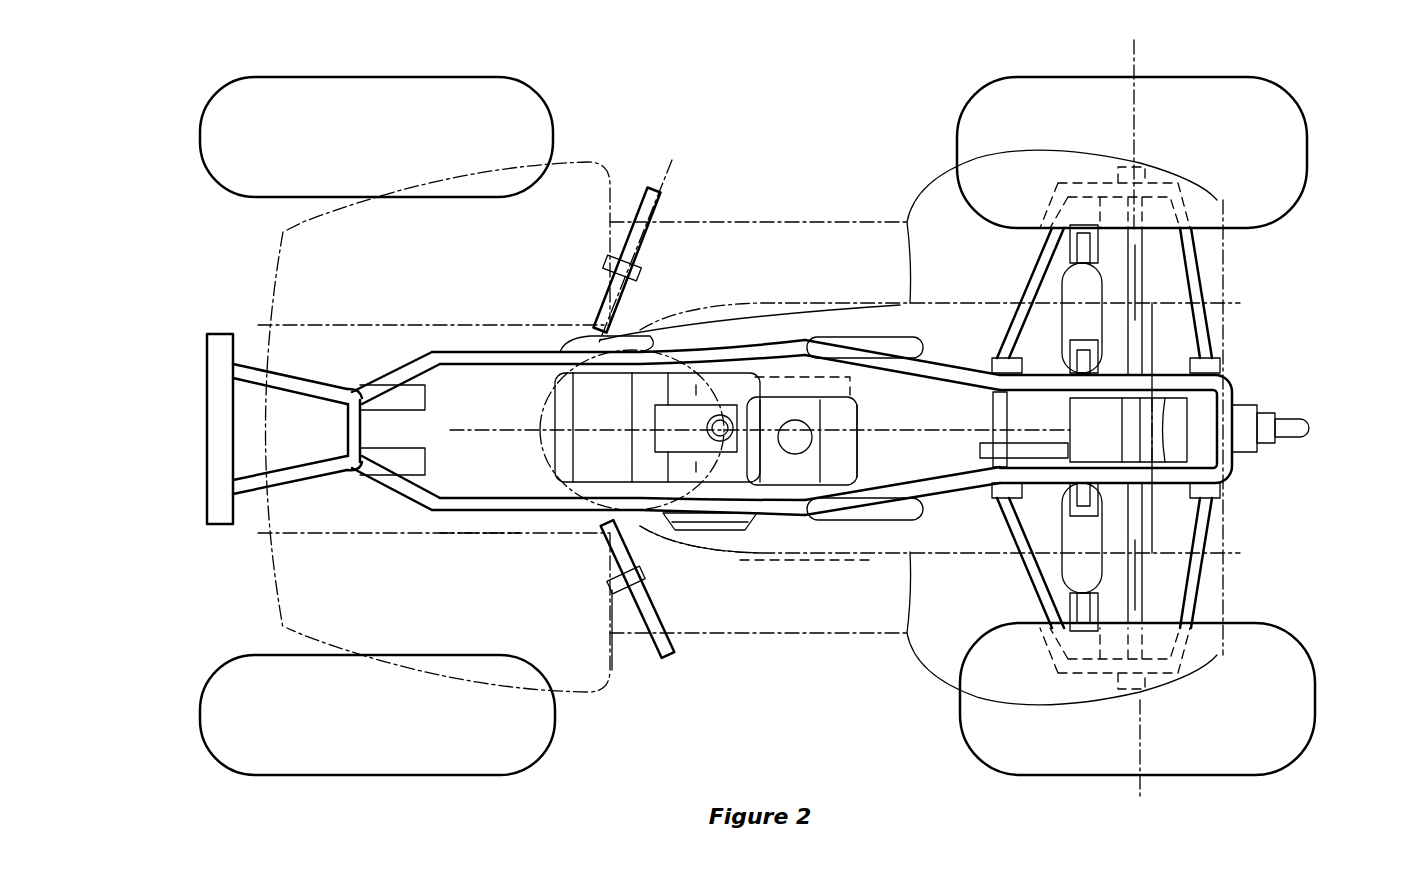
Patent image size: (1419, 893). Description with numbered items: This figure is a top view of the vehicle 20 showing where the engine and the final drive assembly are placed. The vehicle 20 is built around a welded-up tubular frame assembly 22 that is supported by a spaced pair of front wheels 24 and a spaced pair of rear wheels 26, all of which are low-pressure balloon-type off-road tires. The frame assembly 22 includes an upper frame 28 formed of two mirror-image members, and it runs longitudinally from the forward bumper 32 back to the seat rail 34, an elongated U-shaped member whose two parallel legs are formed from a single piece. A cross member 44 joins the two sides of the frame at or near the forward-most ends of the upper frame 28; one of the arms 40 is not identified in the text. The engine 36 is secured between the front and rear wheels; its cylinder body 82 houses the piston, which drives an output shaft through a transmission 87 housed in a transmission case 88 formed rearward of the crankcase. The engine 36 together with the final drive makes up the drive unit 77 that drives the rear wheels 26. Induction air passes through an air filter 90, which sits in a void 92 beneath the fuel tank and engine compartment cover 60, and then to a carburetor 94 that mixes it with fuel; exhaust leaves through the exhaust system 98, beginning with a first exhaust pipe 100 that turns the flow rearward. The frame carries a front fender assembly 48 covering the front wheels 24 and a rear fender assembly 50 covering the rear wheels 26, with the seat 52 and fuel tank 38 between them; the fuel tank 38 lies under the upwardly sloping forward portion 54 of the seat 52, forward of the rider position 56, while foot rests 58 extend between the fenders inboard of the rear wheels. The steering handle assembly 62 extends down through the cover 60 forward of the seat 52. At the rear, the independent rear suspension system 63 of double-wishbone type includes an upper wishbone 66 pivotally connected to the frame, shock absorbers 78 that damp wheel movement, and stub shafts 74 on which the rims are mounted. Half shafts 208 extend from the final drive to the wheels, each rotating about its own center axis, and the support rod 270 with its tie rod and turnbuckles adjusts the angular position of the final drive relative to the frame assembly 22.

The vehicle 20 is at (662, 97).
The frame assembly 22 is at (488, 350).
The front wheels 24 is at (538, 118).
The rear wheels 26 is at (1303, 142).
The upper frame 28 is at (527, 355).
The forward bumper 32 is at (215, 362).
The seat rail 34 is at (1230, 470).
The engine 36 is at (692, 550).
The fuel tank 38 is at (810, 468).
The front frame arms 40 is at (300, 375).
The cross member 44 is at (345, 432).
The front fender assembly 48 is at (300, 220).
The rear fender assembly 50 is at (992, 145).
The seat 52 is at (872, 300).
The upwardly sloping forward portion 54 is at (700, 305).
The rider position 56 is at (955, 300).
The foot rest 58 is at (792, 222).
The fuel tank and engine compartment cover 60 is at (475, 540).
The steering handle assembly 62 is at (630, 617).
The independent rear suspension system 63 is at (1200, 258).
The upper wishbone 66 is at (1035, 250).
The stub shaft 74 is at (745, 537).
The drive unit 77 is at (722, 532).
The shock absorbers 78 is at (1062, 315).
The cylinder body 82 is at (580, 455).
The transmission 87 is at (862, 444).
The transmission case 88 is at (858, 470).
The air filter 90 is at (727, 400).
The void 92 is at (600, 460).
The carburetor 94 is at (775, 400).
The exhaust system 98 is at (598, 334).
The first exhaust pipe 100 is at (650, 265).
The half shafts 208 is at (1143, 255).
The support rod 270 is at (1045, 460).